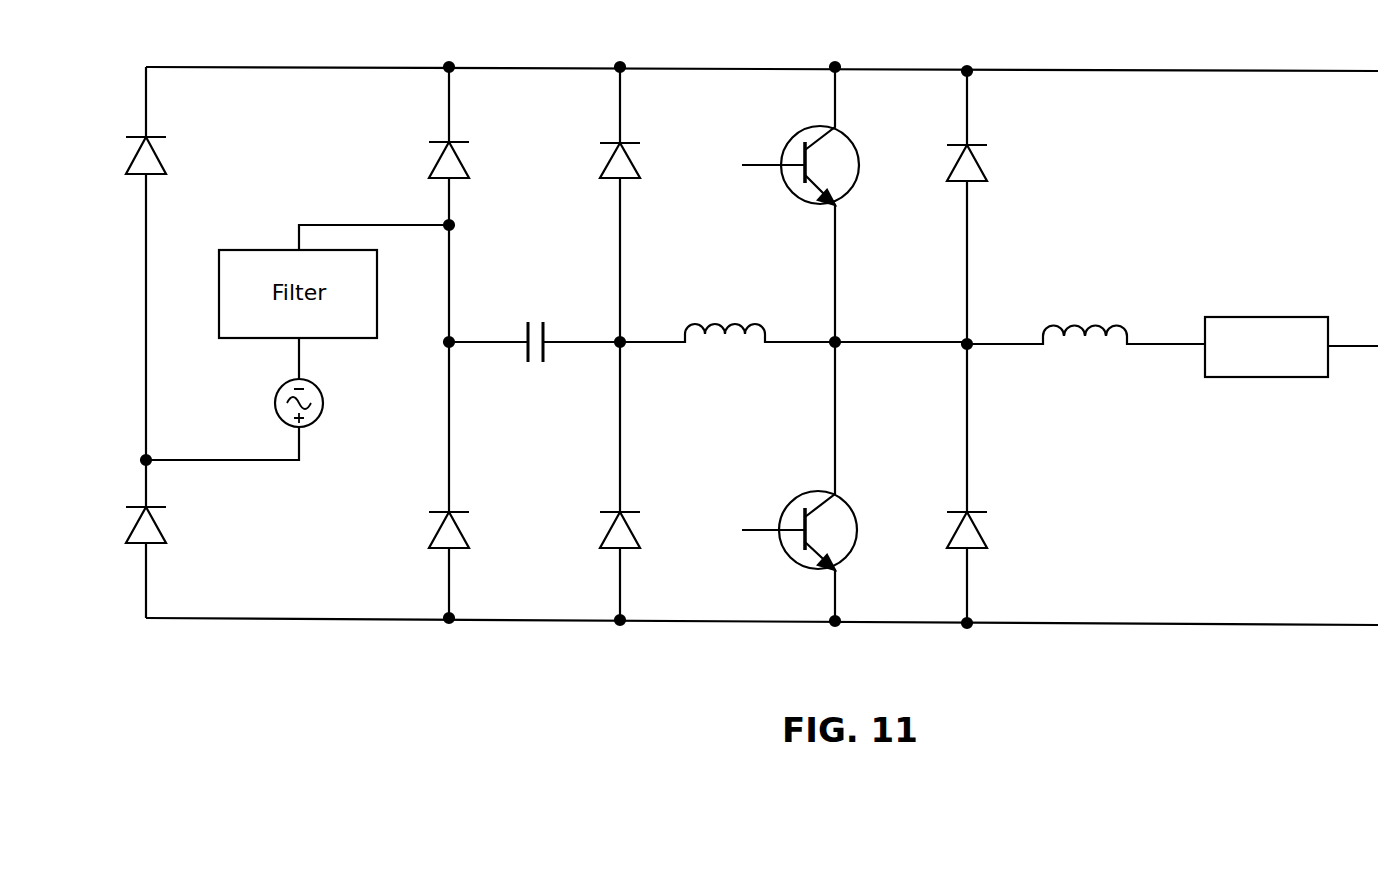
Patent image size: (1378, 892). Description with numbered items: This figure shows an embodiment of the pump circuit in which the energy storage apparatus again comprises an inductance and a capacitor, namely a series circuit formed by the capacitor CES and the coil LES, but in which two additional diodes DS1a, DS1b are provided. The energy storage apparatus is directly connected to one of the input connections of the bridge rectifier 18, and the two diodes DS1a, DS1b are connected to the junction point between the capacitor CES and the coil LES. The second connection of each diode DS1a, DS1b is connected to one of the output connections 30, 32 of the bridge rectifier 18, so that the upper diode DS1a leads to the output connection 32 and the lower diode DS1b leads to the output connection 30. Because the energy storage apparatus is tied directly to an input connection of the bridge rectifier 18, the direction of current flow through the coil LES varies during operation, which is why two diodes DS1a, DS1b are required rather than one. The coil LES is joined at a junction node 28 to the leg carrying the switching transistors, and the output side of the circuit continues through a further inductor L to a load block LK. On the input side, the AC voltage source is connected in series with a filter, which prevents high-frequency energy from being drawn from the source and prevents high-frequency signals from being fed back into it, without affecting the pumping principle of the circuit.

The bridge rectifier 18 is at (762, 47).
The output connection of the bridge rectifier 32 is at (449, 323).
The output connection of the bridge rectifier 30 is at (762, 646).
The output node between switching transistors 28 is at (898, 357).
The diode DS1a is at (658, 202).
The diode DS1b is at (657, 481).
The capacitor CES is at (534, 325).
The coil LES is at (727, 315).
The inductor L is at (1086, 344).
The load block LK is at (1291, 347).